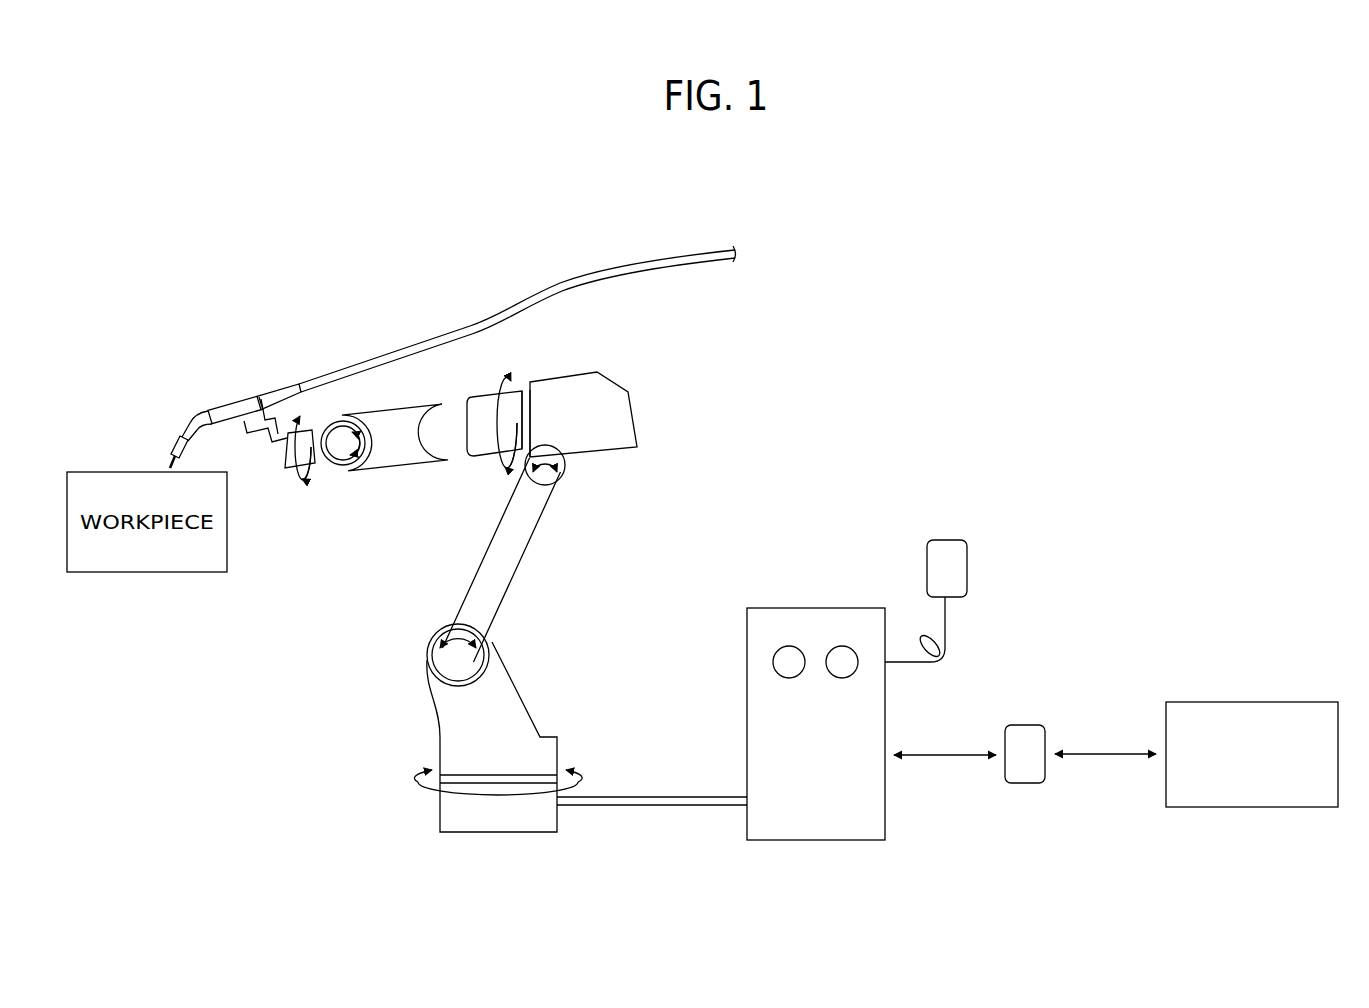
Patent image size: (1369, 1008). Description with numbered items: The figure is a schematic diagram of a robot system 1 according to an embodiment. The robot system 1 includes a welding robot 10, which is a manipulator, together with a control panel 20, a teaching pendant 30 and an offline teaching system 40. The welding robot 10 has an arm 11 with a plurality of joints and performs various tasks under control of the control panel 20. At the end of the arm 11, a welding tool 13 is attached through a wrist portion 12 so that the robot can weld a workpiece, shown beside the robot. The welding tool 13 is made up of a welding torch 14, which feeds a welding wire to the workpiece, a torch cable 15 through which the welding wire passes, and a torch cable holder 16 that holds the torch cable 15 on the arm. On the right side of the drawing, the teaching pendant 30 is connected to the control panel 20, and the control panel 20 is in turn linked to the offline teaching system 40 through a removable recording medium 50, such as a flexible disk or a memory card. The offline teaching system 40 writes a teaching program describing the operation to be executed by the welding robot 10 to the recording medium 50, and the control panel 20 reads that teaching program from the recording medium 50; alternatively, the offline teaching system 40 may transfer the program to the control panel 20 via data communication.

The robot system 1 is at (1000, 230).
The welding robot 10 is at (636, 412).
The arm 11 is at (380, 472).
The wrist portion 12 is at (262, 450).
The welding tool 13 is at (218, 331).
The welding torch 14 is at (180, 437).
The torch cable 15 is at (561, 281).
The torch cable holder 16 is at (277, 393).
The control panel 20 is at (817, 608).
The teaching pendant 30 is at (949, 540).
The offline teaching system 40 is at (1308, 702).
The recording medium 50 is at (1028, 725).